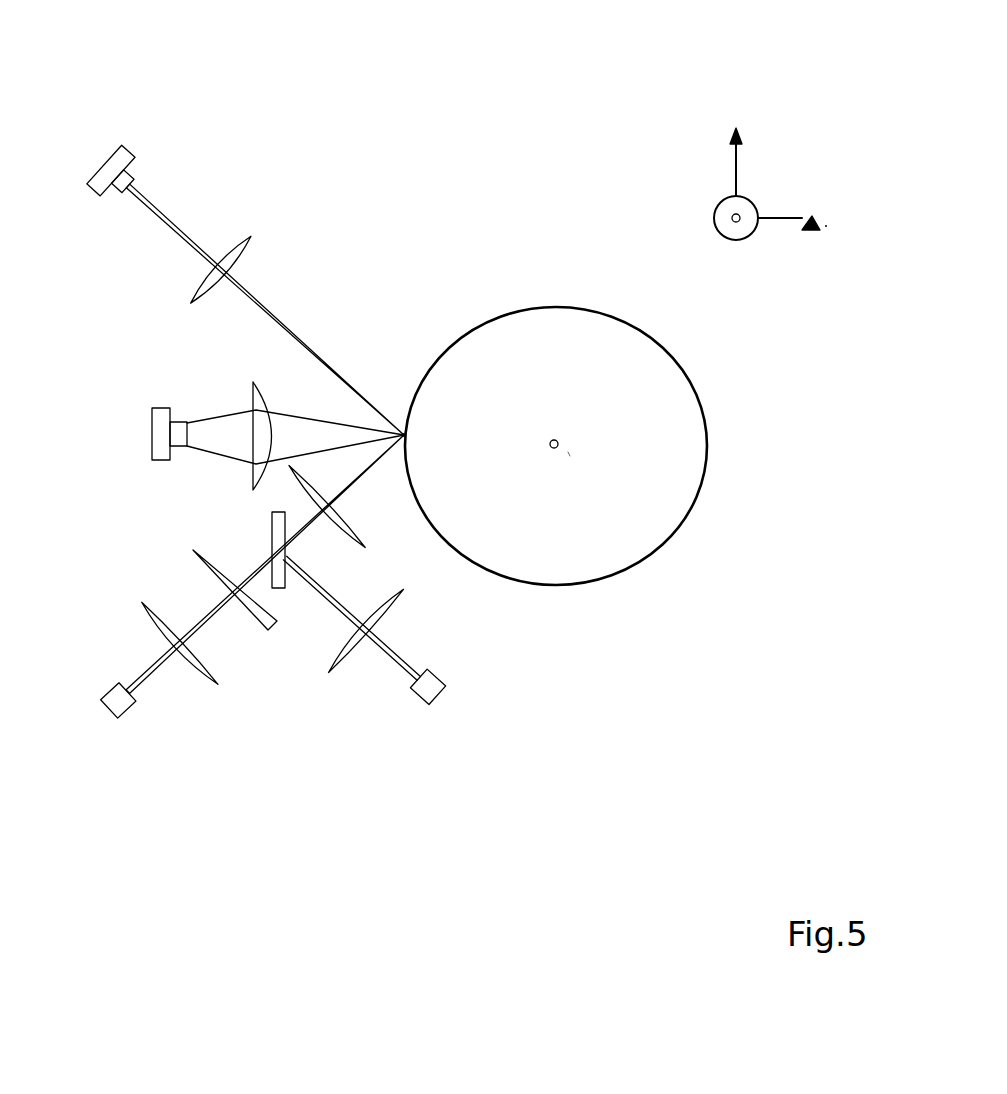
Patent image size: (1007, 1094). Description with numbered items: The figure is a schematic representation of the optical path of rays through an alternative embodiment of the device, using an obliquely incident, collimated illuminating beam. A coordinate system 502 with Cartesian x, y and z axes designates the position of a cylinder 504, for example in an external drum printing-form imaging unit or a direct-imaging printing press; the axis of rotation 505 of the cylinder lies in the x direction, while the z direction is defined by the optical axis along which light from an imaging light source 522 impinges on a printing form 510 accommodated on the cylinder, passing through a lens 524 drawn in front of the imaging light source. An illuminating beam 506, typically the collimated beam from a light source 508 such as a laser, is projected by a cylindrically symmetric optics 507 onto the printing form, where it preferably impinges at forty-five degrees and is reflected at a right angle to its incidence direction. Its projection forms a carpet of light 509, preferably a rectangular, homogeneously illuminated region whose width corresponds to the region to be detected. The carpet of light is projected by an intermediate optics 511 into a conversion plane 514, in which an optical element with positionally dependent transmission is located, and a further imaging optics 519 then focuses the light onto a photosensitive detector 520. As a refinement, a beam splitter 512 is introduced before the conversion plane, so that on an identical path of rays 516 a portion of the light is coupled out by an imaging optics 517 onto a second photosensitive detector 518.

The coordinate system 502 is at (705, 170).
The cylinder 504 is at (568, 452).
The axis of rotation 505 is at (557, 437).
The illuminating beam 506 is at (307, 340).
The cylindrically symmetric optics 507 is at (228, 252).
The light source 508 is at (118, 137).
The carpet of light 509 is at (392, 424).
The printing form 510 is at (703, 477).
The intermediate optics 511 is at (342, 524).
The beam splitter 512 is at (267, 537).
The conversion plane 514 is at (271, 633).
The path of rays 516 is at (388, 658).
The imaging optics 517 is at (382, 617).
The photosensitive detector 518 is at (443, 692).
The imaging optics 519 is at (165, 622).
The photosensitive detector 520 is at (132, 710).
The imaging light source 522 is at (163, 428).
The lens 524 is at (252, 395).